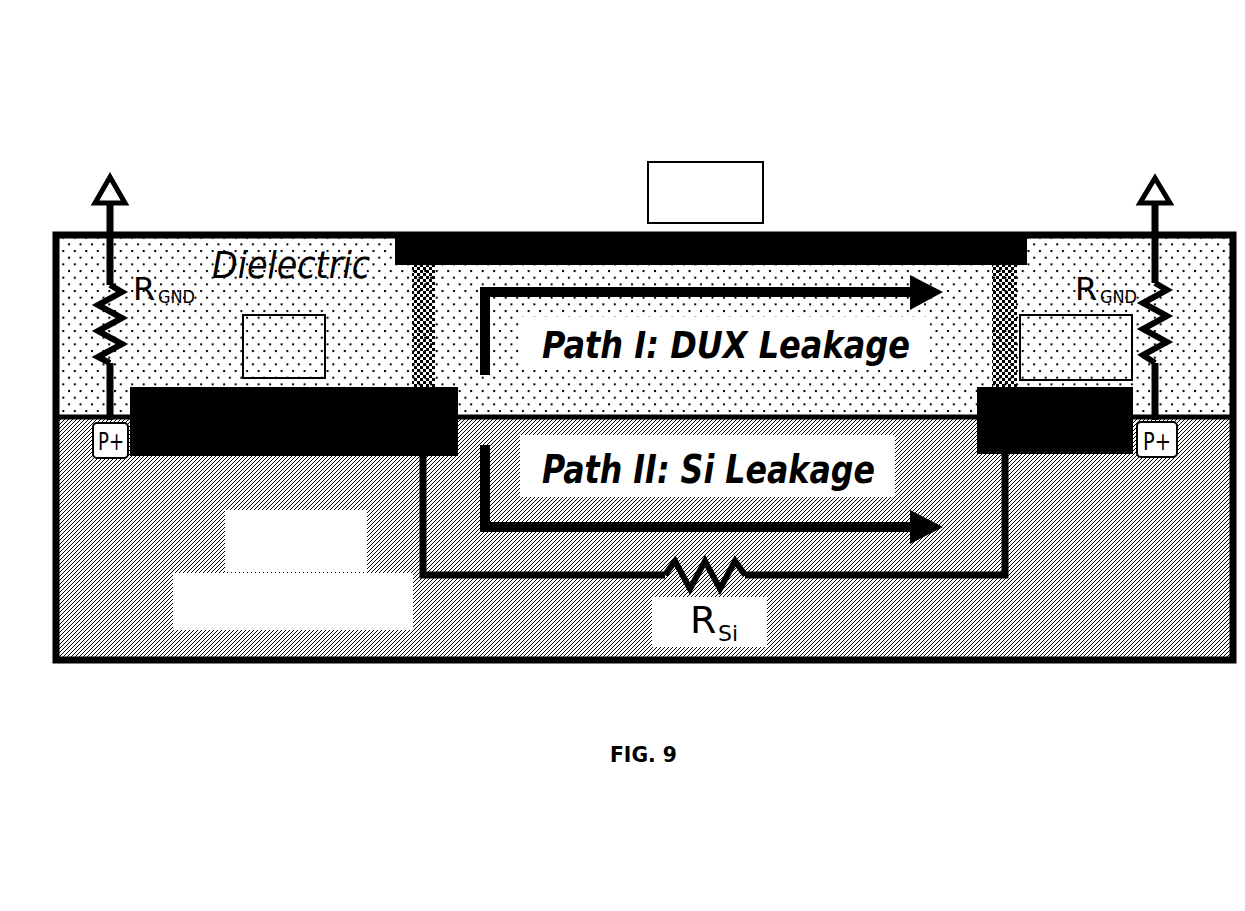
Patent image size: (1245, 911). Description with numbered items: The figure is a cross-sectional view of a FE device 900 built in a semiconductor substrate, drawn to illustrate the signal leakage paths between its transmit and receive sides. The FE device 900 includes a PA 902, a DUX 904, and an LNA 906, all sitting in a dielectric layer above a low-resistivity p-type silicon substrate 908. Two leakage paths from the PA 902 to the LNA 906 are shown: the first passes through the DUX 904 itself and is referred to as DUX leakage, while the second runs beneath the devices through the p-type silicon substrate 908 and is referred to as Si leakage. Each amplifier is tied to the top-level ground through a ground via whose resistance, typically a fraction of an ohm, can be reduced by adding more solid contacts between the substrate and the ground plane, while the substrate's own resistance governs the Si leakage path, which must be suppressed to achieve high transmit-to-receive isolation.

The FE device 900 is at (644, 387).
The PA 902 is at (328, 305).
The DUX 904 is at (690, 158).
The LNA 906 is at (1050, 315).
The p-type silicon substrate 908 is at (222, 627).